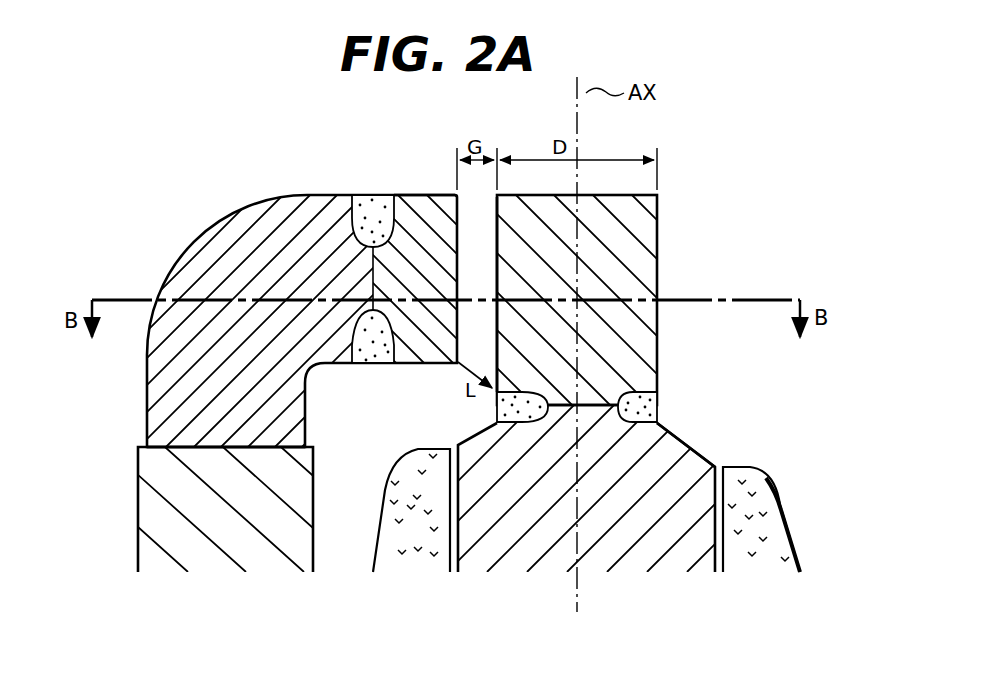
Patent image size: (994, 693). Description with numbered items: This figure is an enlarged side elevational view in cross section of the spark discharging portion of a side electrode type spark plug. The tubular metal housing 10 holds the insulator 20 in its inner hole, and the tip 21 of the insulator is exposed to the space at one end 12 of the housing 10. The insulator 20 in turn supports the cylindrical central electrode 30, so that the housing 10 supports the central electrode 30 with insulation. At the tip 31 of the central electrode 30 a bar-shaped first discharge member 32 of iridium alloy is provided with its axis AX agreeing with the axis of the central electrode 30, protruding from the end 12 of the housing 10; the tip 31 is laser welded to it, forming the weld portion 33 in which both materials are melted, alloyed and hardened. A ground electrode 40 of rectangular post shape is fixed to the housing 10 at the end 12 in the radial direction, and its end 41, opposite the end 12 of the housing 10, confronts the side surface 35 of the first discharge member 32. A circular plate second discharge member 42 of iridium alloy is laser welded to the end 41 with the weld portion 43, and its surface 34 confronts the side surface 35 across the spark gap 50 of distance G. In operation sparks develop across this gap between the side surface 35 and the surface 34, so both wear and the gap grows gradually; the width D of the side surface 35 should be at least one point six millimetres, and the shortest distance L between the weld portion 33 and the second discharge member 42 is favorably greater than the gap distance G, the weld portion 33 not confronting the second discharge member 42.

The metal housing 10 is at (135, 525).
The one end of the housing 12 is at (138, 446).
The insulator 20 is at (806, 553).
The tip of the insulator 21 is at (750, 467).
The central electrode 30 is at (672, 528).
The tip of the central electrode 31 is at (676, 438).
The first discharge member 32 is at (658, 210).
The weld portion 33 is at (660, 412).
The surface of the second discharge member 34 is at (458, 327).
The side surface of the first discharge member 35 is at (498, 352).
The ground electrode 40 is at (217, 227).
The end of the ground electrode 41 is at (372, 260).
The second discharge member 42 is at (422, 193).
The weld portion 43 is at (382, 193).
The spark gap 50 is at (478, 262).